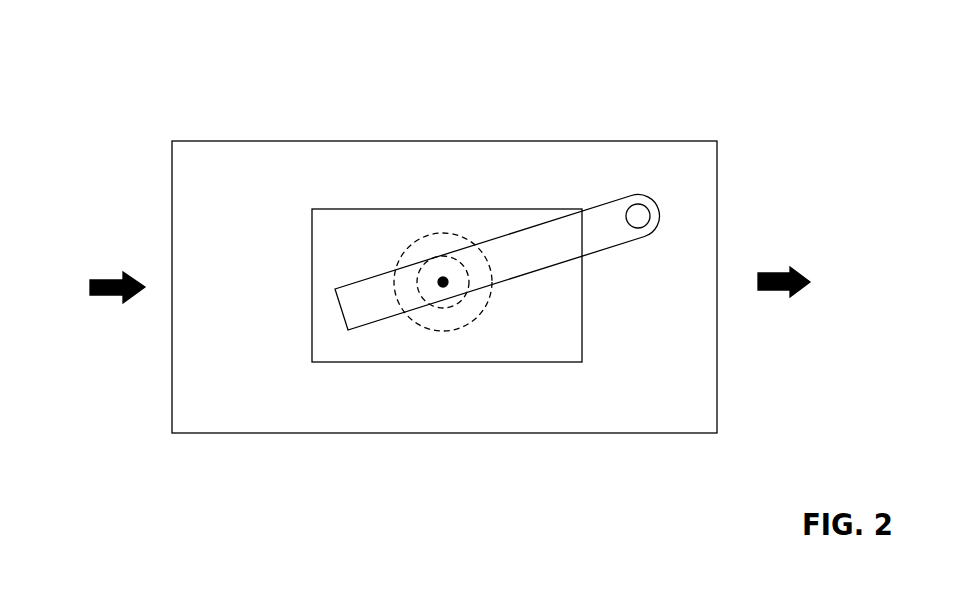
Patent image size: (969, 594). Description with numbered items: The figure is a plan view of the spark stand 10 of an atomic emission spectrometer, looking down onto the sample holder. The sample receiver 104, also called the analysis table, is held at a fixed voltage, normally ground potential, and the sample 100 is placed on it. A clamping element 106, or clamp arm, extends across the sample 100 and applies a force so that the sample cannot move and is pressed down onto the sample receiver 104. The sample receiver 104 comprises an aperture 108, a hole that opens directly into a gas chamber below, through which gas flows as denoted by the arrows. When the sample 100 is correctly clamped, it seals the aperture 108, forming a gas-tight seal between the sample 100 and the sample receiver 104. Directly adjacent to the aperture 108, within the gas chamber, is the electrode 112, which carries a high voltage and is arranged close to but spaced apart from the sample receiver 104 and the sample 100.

The spark stand 10 is at (173, 101).
The sample 100 is at (466, 198).
The sample receiver 104 is at (166, 443).
The clamping element 106 is at (603, 244).
The aperture 108 is at (392, 262).
The electrode 112 is at (428, 314).